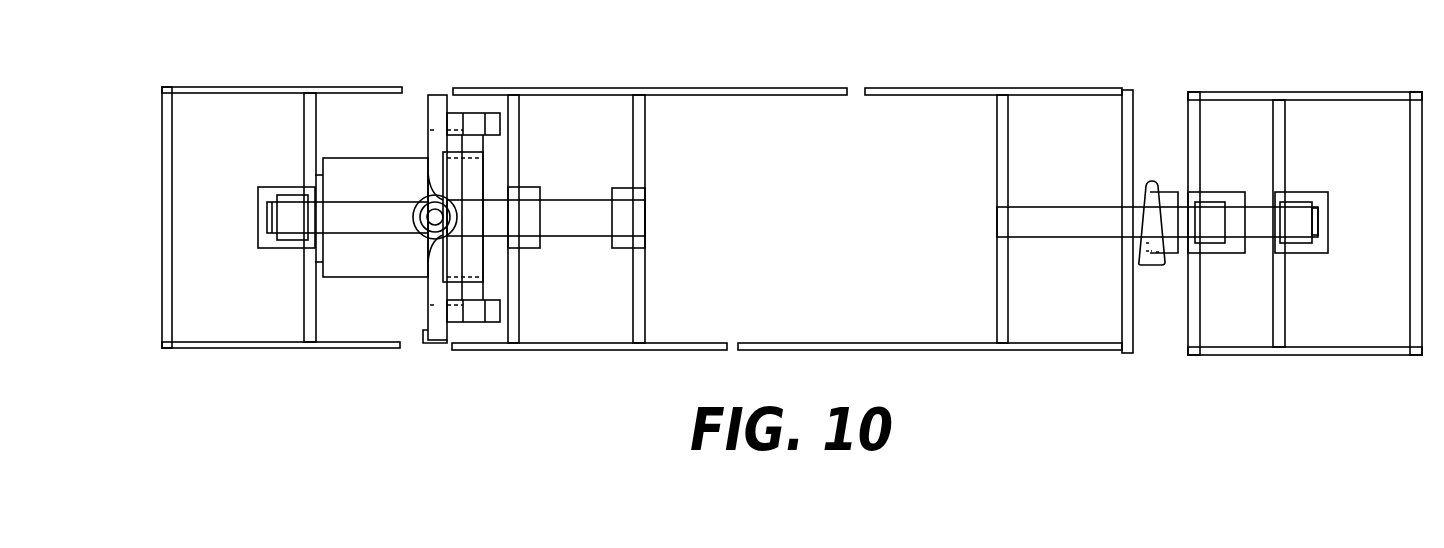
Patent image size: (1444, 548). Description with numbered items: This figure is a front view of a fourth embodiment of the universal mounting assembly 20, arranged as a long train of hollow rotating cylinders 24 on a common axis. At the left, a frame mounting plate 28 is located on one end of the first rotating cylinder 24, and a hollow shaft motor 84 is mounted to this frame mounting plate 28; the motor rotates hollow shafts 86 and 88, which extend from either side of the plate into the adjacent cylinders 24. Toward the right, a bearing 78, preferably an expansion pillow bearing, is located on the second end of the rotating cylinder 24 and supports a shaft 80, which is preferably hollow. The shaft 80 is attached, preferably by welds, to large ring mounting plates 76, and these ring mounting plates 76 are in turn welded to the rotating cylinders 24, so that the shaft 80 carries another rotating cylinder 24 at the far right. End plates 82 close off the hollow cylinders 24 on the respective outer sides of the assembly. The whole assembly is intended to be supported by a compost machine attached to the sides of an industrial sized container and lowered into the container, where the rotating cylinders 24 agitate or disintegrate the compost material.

The universal mounting assembly 20 is at (430, 86).
The rotating cylinder 24 is at (262, 88).
The frame mounting plate 28 is at (433, 333).
The large ring mounting plate 76 is at (307, 317).
The bearing 78 is at (1152, 183).
The shaft 80 is at (1045, 207).
The end plate 82 is at (168, 174).
The hollow shaft motor 84 is at (378, 177).
The hollow shaft 86 is at (548, 215).
The hollow shaft 88 is at (368, 234).